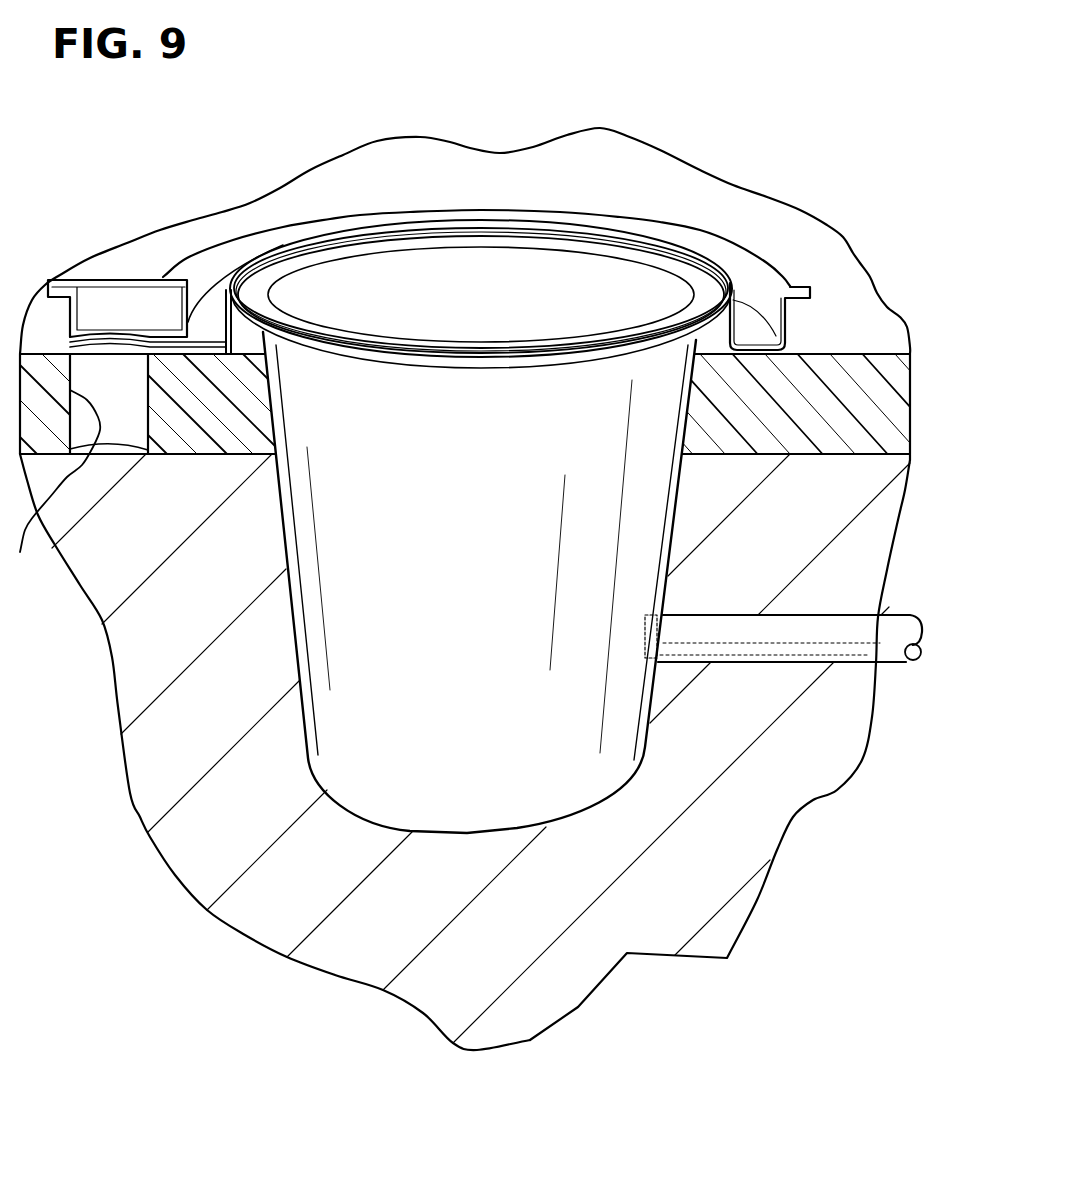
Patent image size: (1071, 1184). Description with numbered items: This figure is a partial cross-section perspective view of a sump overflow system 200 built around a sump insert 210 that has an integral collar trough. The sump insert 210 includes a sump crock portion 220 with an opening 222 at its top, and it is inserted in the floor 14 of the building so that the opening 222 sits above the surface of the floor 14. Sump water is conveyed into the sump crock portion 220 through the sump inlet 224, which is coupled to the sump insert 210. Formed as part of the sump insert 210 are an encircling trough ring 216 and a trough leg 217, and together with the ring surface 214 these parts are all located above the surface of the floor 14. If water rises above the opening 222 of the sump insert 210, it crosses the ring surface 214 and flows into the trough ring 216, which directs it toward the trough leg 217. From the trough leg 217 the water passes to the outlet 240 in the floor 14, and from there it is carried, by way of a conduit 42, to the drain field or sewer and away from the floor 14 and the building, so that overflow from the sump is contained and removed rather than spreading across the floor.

The sump overflow system 200 is at (503, 98).
The floor 14 is at (40, 345).
The outlet 240 is at (110, 370).
The conduit 42 is at (20, 552).
The trough leg 217 is at (163, 337).
The trough ring 216 is at (748, 328).
The ring surface 214 is at (696, 278).
The opening 222 is at (612, 245).
The sump insert 210 is at (255, 568).
The sump crock portion 220 is at (670, 590).
The sump inlet 224 is at (645, 635).